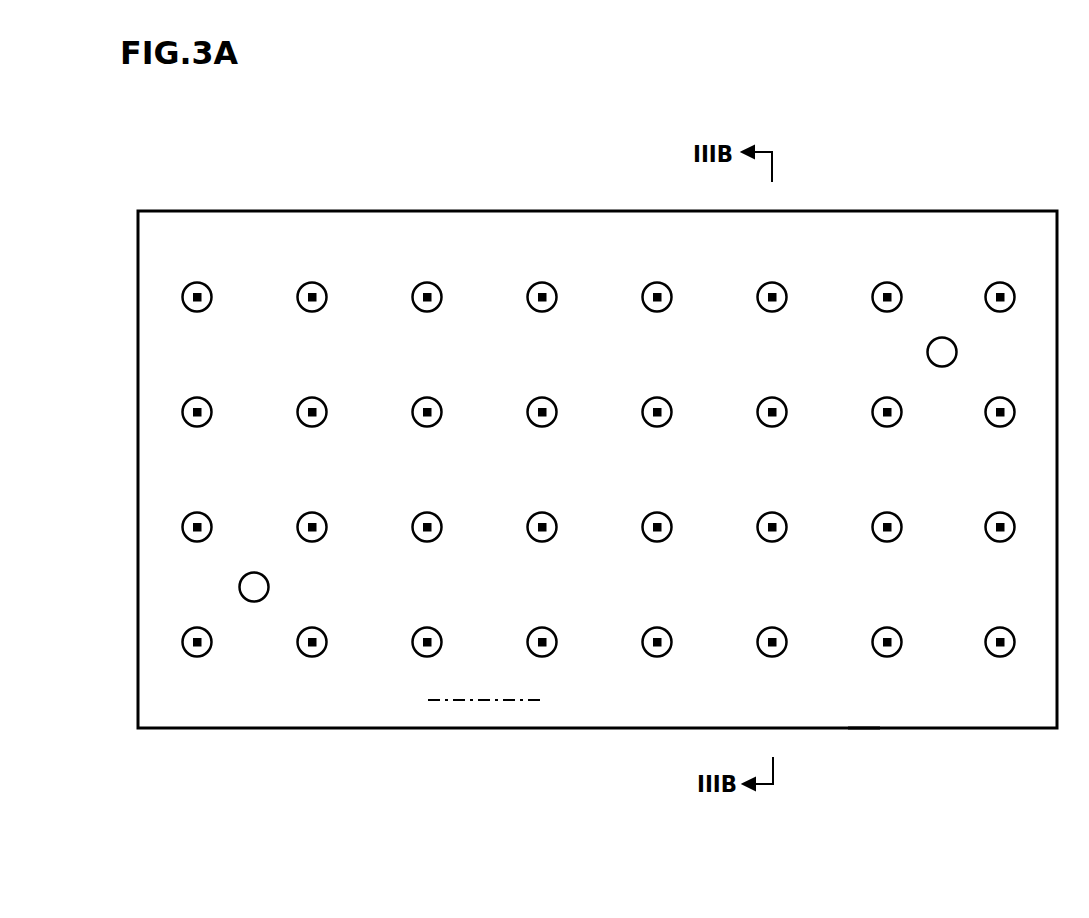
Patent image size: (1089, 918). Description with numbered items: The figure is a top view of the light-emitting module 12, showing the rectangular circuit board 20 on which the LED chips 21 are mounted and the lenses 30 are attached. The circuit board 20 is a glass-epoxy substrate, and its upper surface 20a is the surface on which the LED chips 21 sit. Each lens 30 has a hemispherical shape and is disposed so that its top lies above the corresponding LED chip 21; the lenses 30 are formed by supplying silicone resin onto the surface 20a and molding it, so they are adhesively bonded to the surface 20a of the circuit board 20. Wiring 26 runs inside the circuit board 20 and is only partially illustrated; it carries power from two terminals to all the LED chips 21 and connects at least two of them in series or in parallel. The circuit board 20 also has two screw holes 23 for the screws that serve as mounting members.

The light-emitting module 12 is at (998, 193).
The circuit board 20 is at (985, 728).
The surface 20a is at (857, 698).
The LED chip 21 is at (538, 292).
The screw hole 23 is at (941, 337).
The wiring 26 is at (487, 700).
The lens 30 is at (550, 283).